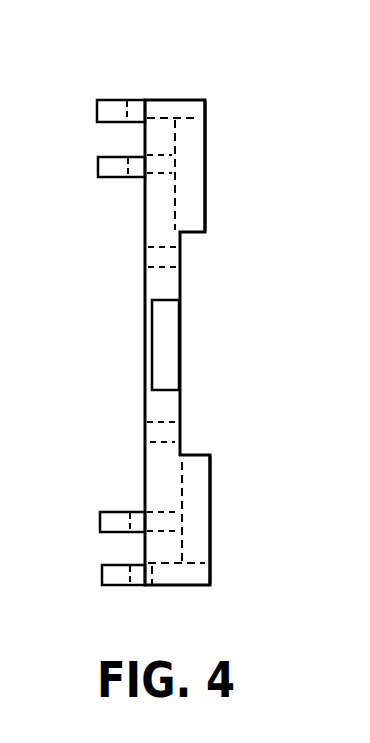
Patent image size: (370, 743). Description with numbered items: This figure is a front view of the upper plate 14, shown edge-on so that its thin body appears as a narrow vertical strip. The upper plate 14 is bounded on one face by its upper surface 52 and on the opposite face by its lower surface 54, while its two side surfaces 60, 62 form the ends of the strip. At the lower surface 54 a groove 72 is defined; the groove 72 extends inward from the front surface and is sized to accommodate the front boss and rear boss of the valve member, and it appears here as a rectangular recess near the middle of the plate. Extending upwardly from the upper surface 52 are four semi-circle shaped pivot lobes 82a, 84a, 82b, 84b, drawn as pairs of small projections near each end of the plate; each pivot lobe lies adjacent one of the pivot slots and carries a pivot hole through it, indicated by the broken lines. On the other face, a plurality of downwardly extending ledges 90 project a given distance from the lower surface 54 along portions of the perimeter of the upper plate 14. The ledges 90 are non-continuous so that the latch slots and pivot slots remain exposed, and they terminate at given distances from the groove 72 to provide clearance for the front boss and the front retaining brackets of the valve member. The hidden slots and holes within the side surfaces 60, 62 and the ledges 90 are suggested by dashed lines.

The upper plate 14 is at (86, 92).
The upper surface 52 is at (145, 233).
The lower surface 54 is at (180, 400).
The side surface 60 is at (172, 99).
The side surface 62 is at (173, 588).
The groove 72 is at (160, 344).
The pivot lobe 82a is at (108, 99).
The pivot lobe 82b is at (127, 587).
The pivot lobe 84a is at (112, 178).
The pivot lobe 84b is at (128, 512).
The ledges 90 is at (205, 189).